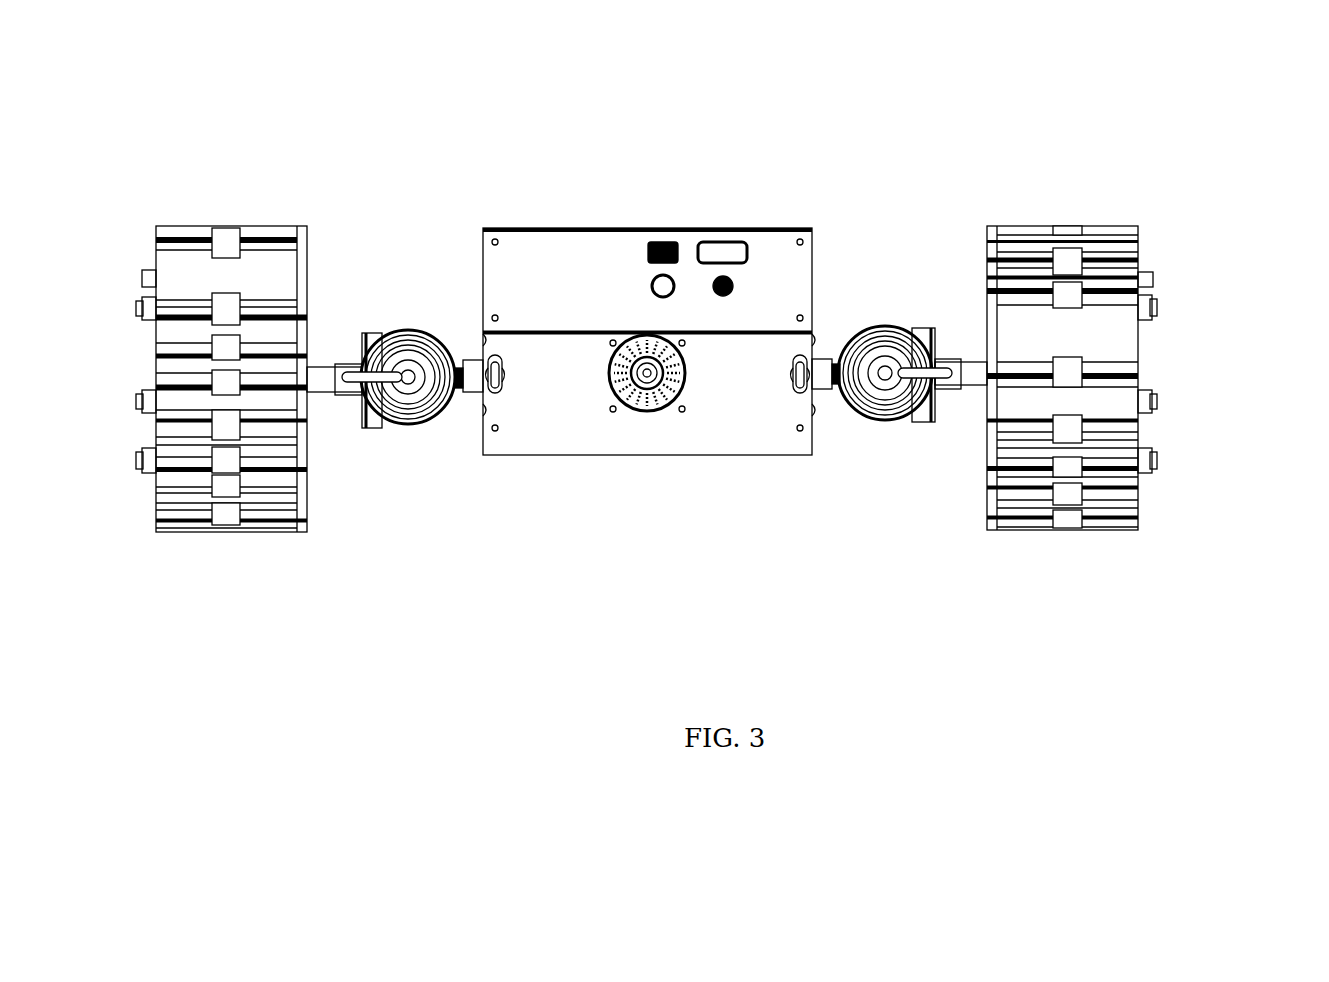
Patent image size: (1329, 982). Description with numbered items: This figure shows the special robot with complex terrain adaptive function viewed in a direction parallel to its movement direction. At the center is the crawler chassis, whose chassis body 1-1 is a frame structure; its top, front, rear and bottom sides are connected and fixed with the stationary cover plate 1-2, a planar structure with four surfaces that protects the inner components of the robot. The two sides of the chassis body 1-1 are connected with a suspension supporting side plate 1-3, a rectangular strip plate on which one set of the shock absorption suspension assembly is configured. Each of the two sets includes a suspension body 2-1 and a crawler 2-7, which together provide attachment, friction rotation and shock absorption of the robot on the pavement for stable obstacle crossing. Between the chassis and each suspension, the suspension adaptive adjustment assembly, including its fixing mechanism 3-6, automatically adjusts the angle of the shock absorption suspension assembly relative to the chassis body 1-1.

The chassis body 1-1 is at (671, 319).
The cover plate 1-2 is at (590, 228).
The suspension supporting side plate 1-3 is at (813, 228).
The suspension body 2-1 is at (992, 227).
The crawler 2-7 is at (1107, 530).
The fixing mechanism 3-6 is at (910, 398).